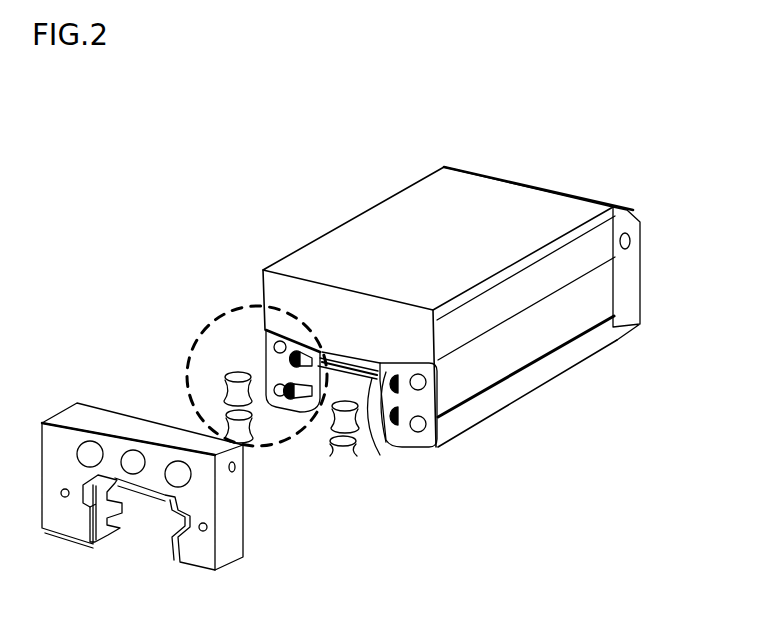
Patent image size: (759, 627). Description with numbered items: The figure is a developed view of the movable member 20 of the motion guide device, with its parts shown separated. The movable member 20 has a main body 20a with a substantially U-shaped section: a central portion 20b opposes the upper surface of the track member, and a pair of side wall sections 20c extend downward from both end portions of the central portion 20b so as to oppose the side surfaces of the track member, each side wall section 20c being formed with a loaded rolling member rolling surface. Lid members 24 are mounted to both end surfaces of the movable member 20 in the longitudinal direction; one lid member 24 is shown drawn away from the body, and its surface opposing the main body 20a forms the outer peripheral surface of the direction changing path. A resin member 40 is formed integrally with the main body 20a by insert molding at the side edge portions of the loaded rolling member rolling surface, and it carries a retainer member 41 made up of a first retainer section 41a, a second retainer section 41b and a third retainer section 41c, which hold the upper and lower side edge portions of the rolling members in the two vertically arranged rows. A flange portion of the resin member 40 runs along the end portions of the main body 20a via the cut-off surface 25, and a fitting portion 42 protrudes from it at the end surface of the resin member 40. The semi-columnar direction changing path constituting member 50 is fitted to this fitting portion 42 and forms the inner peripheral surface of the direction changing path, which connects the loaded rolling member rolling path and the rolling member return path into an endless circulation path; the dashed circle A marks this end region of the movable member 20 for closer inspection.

The movable member 20 is at (461, 268).
The main body 20a is at (415, 208).
The central portion 20b is at (358, 317).
The side wall section 20c is at (570, 353).
The lid member 24 is at (628, 320).
The cut-off surface 25 is at (343, 347).
The resin member 40 is at (465, 472).
The retainer member 41 is at (416, 477).
The first retainer section 41a is at (382, 378).
The second retainer section 41b is at (390, 400).
The third retainer section 41c is at (402, 425).
The fitting portion 42 is at (405, 443).
The direction changing path constituting member 50 is at (335, 462).
The detail region A is at (207, 323).